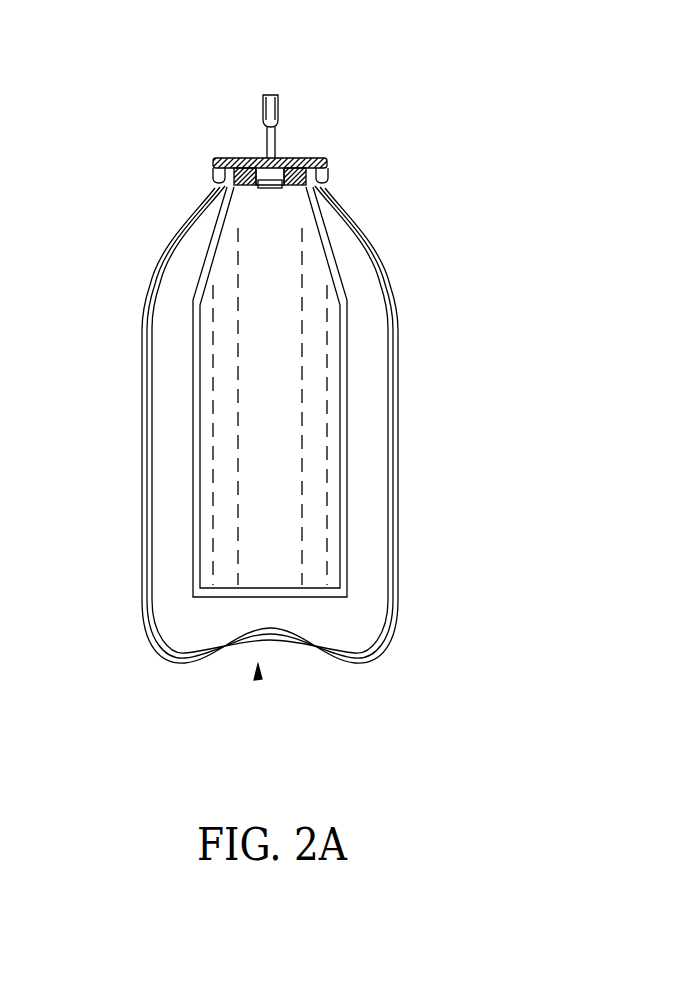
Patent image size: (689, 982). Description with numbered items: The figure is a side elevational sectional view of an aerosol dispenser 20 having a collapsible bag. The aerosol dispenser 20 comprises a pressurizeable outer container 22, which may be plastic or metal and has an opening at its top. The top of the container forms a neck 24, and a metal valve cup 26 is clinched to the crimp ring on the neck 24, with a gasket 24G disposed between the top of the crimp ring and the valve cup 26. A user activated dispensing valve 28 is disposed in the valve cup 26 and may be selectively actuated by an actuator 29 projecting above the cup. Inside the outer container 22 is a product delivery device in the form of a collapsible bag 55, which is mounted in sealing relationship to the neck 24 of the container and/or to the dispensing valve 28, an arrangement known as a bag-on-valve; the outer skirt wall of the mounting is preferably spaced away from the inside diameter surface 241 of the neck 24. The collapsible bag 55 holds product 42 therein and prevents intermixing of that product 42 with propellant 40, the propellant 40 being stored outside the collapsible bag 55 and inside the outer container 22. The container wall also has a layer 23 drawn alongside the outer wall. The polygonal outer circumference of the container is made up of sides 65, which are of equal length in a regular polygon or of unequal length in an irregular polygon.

The aerosol dispenser 20 is at (258, 668).
The outer container 22 is at (393, 418).
The inner layer of outer bottle 23 is at (365, 257).
The neck 24 is at (328, 165).
The gasket 24G is at (300, 157).
The inside diameter surface 241 is at (227, 193).
The valve cup 26 is at (215, 176).
The dispensing valve 28 is at (290, 157).
The actuator 29 is at (263, 111).
The propellant 40 is at (170, 565).
The product 42 is at (253, 473).
The collapsible bag 55 is at (318, 343).
The sides 65 is at (213, 165).